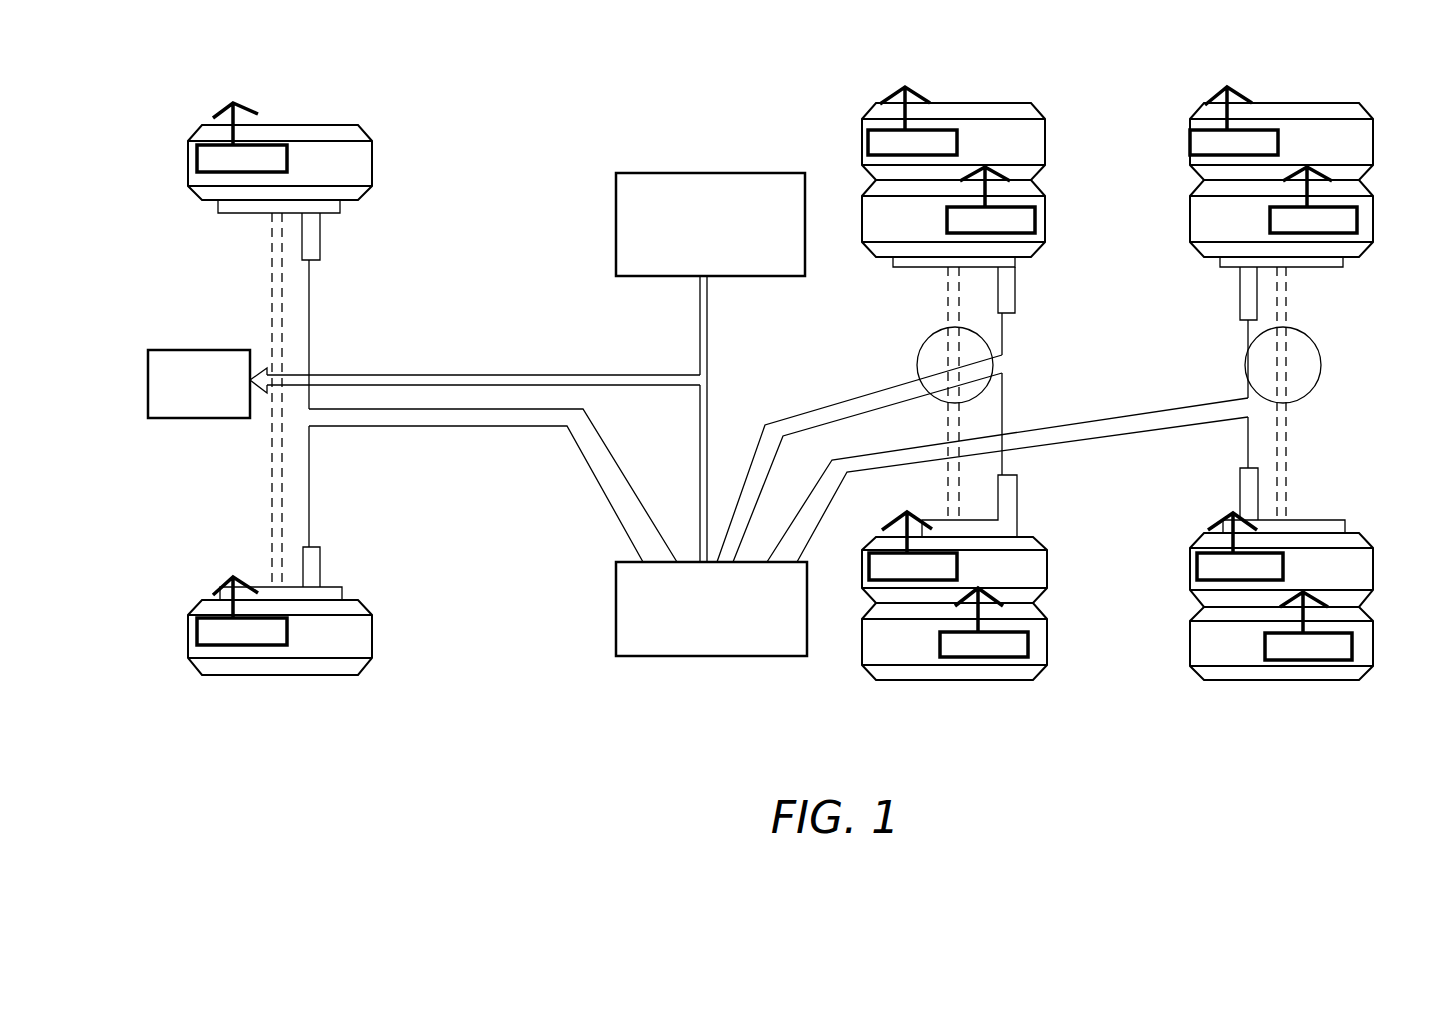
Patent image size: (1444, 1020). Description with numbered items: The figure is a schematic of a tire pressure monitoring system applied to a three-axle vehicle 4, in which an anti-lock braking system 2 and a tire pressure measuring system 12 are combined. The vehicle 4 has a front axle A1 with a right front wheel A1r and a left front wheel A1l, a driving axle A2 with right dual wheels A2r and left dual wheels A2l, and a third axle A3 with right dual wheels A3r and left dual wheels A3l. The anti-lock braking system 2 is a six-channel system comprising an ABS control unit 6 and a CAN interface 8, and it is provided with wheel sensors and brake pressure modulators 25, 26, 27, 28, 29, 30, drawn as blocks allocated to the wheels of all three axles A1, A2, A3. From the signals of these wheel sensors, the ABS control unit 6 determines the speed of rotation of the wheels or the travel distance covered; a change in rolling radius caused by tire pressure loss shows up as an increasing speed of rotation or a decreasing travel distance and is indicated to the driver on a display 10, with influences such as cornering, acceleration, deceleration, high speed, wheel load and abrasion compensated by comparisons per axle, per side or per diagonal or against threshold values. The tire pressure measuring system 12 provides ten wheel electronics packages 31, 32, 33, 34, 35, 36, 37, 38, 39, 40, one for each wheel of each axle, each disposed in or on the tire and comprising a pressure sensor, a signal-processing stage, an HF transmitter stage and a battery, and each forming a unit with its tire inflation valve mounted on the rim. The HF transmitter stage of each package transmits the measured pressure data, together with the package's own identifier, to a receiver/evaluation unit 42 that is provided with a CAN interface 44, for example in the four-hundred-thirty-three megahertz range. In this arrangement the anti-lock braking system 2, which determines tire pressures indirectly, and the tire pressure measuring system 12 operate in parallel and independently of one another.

The anti-lock braking system (ABS) 2 is at (664, 682).
The three-axle vehicle 4 is at (411, 729).
The ABS control unit 6 is at (775, 650).
The CAN interface 8 is at (727, 652).
The display 10 is at (180, 418).
The tire pressure measuring system 12 is at (586, 266).
The wheel sensor and brake pressure modulator 25 is at (320, 258).
The wheel sensor and brake pressure modulator 26 is at (320, 556).
The wheel sensor and brake pressure modulator 27 is at (1015, 305).
The wheel sensor and brake pressure modulator 28 is at (1017, 490).
The wheel sensor and brake pressure modulator 29 is at (1240, 300).
The wheel sensor and brake pressure modulator 30 is at (1240, 483).
The wheel electronics package 31 is at (197, 160).
The wheel electronics package 32 is at (197, 633).
The wheel electronics package 33 is at (1035, 220).
The wheel electronics package 34 is at (868, 140).
The wheel electronics package 35 is at (866, 567).
The wheel electronics package 36 is at (1028, 645).
The wheel electronics package 37 is at (1357, 220).
The wheel electronics package 38 is at (1190, 140).
The wheel electronics package 39 is at (1197, 570).
The wheel electronics package 40 is at (1334, 656).
The receiver/evaluation unit 42 is at (758, 179).
The CAN interface 44 is at (690, 191).
The front axle A1 is at (270, 288).
The right front wheel A1r is at (372, 170).
The left front wheel A1l is at (352, 605).
The driving axle A2 is at (946, 297).
The right dual wheels A2r is at (1035, 250).
The left dual wheels A2l is at (1017, 533).
The third axle A3 is at (1292, 455).
The right dual wheels A3r is at (1200, 248).
The left dual wheels A3l is at (1200, 540).